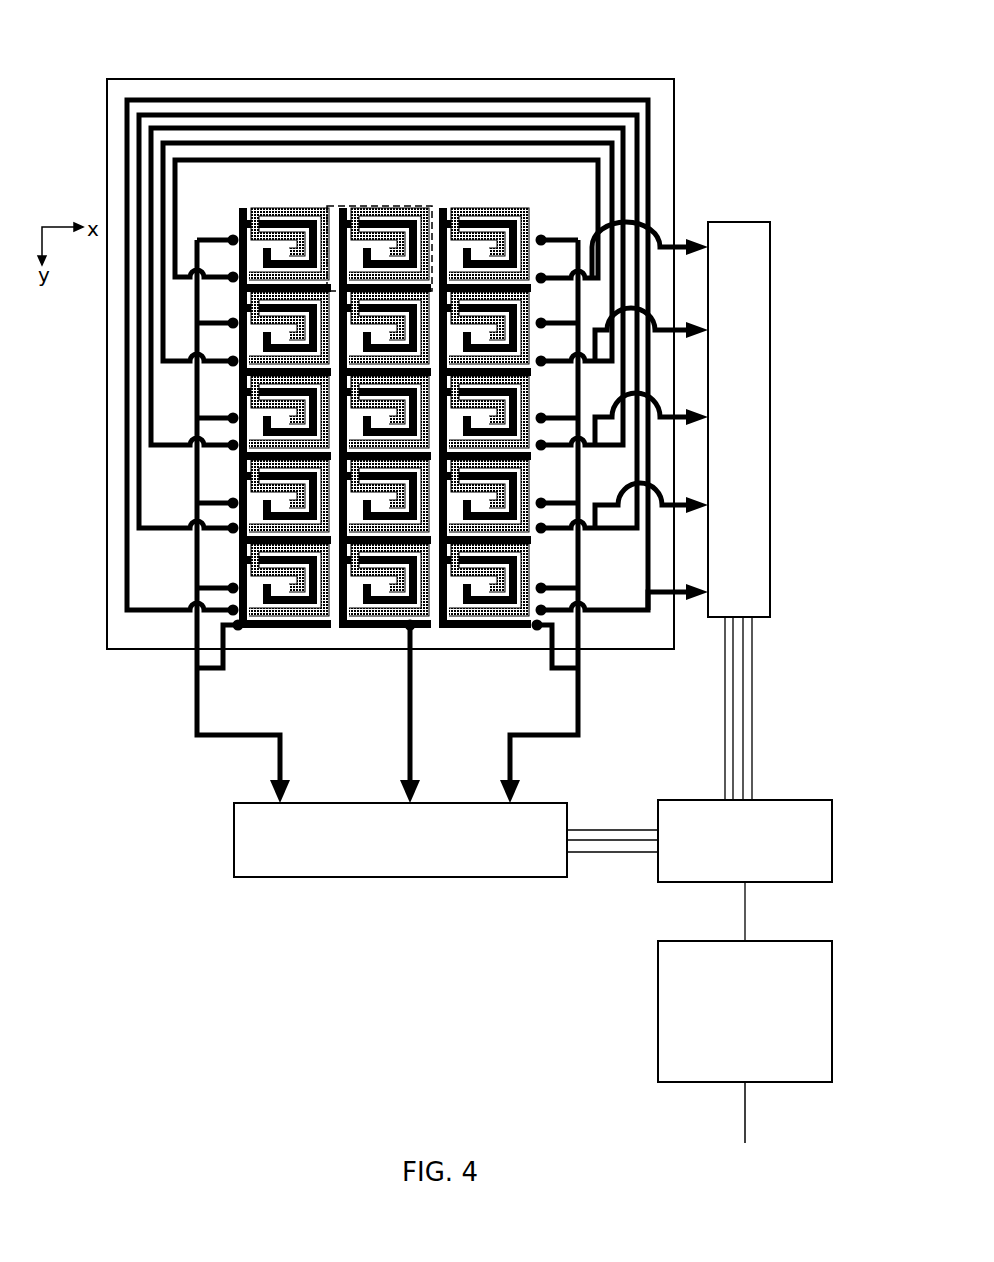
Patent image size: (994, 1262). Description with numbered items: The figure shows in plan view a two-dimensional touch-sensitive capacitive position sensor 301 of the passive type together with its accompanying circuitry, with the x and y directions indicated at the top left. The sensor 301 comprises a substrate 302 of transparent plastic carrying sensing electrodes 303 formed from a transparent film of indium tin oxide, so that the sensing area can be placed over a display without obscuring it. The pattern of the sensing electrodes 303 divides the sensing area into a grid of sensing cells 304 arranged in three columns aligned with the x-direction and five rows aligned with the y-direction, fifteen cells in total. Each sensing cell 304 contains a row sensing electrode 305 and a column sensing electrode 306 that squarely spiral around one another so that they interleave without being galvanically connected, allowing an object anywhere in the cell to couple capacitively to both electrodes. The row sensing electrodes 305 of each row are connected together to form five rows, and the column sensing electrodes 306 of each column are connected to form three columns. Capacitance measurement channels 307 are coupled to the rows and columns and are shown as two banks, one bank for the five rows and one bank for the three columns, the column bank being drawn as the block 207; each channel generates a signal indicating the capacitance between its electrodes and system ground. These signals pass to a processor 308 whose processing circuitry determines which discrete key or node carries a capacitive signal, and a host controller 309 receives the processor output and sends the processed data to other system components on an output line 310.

The 2D touch-sensitive capacitive position sensor 301 is at (622, 52).
The substrate 302 is at (134, 634).
The sensing electrodes 303 is at (277, 640).
The sensing cells 304 is at (370, 207).
The row sensing electrode 305 is at (383, 207).
The column sensing electrode 306 is at (350, 207).
The capacitance measurement channels 307 is at (772, 293).
The processor 308 is at (782, 798).
The host controller 309 is at (657, 1018).
The output line 310 is at (743, 1107).
The X-line driver 207 is at (340, 877).